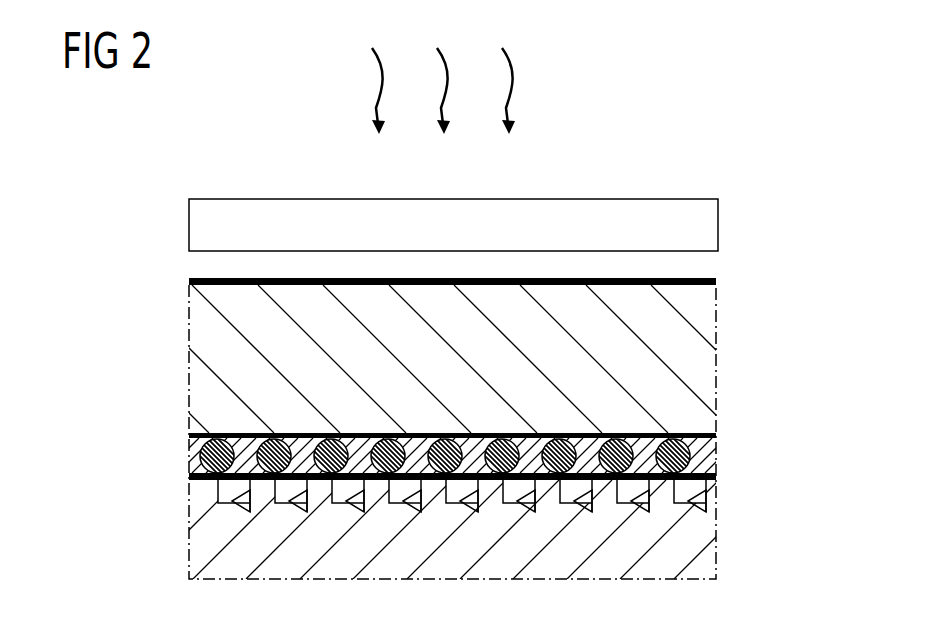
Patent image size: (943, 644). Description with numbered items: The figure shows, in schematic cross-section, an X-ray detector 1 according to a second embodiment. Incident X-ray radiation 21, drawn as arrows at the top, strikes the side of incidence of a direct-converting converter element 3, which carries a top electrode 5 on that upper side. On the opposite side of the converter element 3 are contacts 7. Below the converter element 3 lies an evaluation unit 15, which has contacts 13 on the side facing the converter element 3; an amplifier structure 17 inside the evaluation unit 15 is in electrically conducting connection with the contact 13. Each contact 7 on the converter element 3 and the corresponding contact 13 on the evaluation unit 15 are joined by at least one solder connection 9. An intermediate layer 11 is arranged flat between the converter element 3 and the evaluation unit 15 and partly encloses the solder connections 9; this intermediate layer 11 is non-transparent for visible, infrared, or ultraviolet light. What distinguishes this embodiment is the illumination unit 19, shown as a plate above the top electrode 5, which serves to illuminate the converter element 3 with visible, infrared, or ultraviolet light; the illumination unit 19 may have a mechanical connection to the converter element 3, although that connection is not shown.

The X-ray detector 1 is at (120, 305).
The direct-converting converter element 3 is at (708, 368).
The top electrode 5 is at (697, 284).
The contacts 7 is at (682, 431).
The solder connection 9 is at (205, 455).
The intermediate layer 11 is at (707, 455).
The contacts 13 is at (700, 494).
The evaluation unit 15 is at (705, 553).
The amplifier structure 17 is at (220, 491).
The illumination unit 19 is at (706, 225).
The X-ray radiation 21 is at (513, 73).